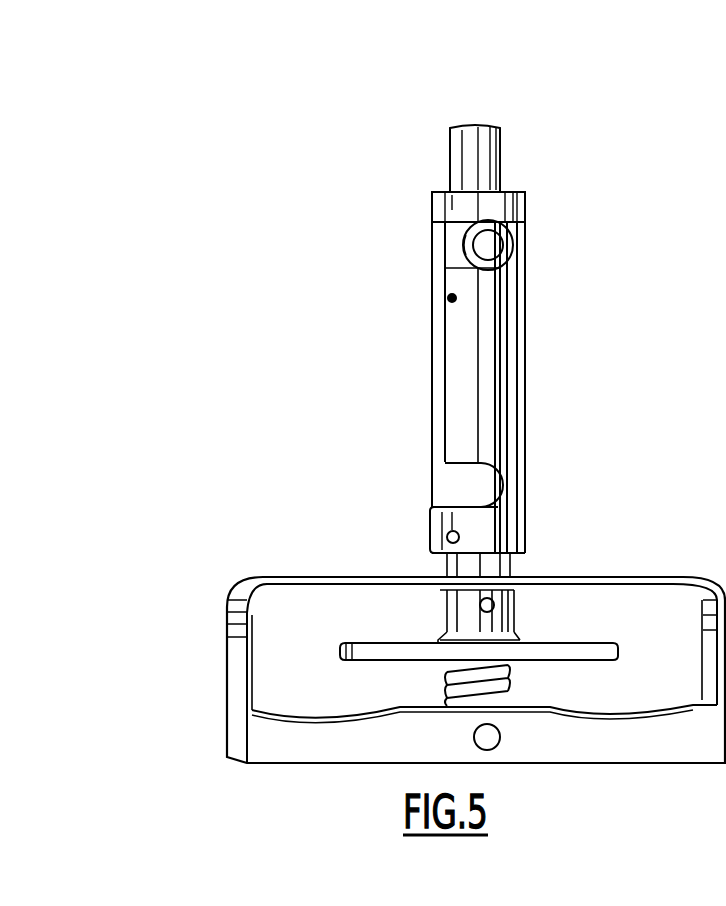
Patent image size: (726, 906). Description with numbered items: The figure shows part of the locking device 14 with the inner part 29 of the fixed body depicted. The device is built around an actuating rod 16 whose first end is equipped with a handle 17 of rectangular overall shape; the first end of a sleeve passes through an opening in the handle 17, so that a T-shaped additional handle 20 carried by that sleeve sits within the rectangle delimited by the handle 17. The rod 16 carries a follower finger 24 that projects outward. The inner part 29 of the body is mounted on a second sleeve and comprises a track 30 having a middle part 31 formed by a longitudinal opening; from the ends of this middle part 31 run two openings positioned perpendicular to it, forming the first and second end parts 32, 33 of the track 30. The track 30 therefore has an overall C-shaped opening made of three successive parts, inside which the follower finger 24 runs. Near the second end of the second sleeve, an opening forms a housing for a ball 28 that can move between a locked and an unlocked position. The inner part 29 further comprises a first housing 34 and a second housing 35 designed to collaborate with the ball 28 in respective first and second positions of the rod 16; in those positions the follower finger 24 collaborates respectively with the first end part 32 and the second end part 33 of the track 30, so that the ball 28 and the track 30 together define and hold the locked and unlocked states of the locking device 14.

The locking device 14 is at (382, 163).
The actuating rod 16 is at (482, 160).
The first end part of the track 32 is at (453, 232).
The follower finger 24 is at (488, 246).
The ball 28 is at (569, 297).
The first housing 34 is at (452, 298).
The inner part of the fixed body 29 is at (485, 383).
The track 30 is at (383, 342).
The middle part of the track 31 is at (445, 400).
The second end part of the track 33 is at (470, 485).
The second housing 35 is at (445, 535).
The additional handle 20 is at (562, 648).
The handle 17 is at (610, 733).